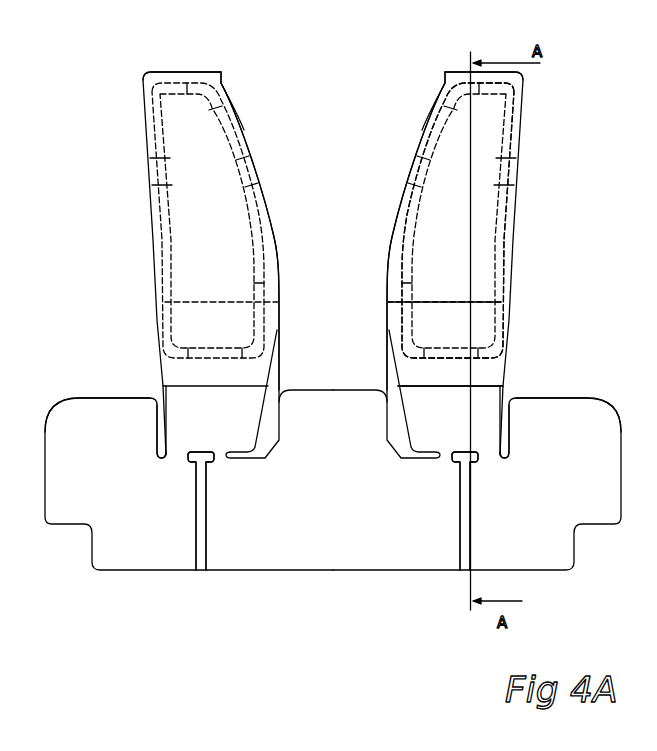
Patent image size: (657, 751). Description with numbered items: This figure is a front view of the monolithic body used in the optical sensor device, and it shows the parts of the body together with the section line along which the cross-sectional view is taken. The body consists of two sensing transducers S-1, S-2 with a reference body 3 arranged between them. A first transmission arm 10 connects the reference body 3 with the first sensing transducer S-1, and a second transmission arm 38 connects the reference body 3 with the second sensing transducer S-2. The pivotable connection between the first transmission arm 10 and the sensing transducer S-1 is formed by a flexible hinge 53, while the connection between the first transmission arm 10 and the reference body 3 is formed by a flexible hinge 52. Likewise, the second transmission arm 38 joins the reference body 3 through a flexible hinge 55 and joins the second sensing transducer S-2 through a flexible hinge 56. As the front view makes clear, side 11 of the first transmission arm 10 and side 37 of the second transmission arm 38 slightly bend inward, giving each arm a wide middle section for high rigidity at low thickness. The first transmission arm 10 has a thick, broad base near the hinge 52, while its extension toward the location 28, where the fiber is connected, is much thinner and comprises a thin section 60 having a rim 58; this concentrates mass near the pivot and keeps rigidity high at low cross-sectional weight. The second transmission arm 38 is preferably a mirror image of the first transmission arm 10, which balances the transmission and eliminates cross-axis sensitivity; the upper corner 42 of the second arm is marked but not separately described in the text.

The reference body 3 is at (338, 388).
The first transmission arm 10 is at (398, 210).
The side of the first transmission arm 11 is at (390, 250).
The location 28 is at (446, 76).
The thin section 60 is at (450, 163).
The rim 58 is at (390, 286).
The second transmission arm 38 is at (148, 187).
The top corner of second support member 42 is at (221, 80).
The side of the second transmission arm 37 is at (275, 251).
The flexible hinge 52 is at (448, 460).
The flexible hinge 53 is at (485, 458).
The flexible hinge 55 is at (217, 460).
The flexible hinge 56 is at (178, 460).
The sensing transducer S-1 is at (568, 398).
The sensing transducer S-2 is at (52, 407).